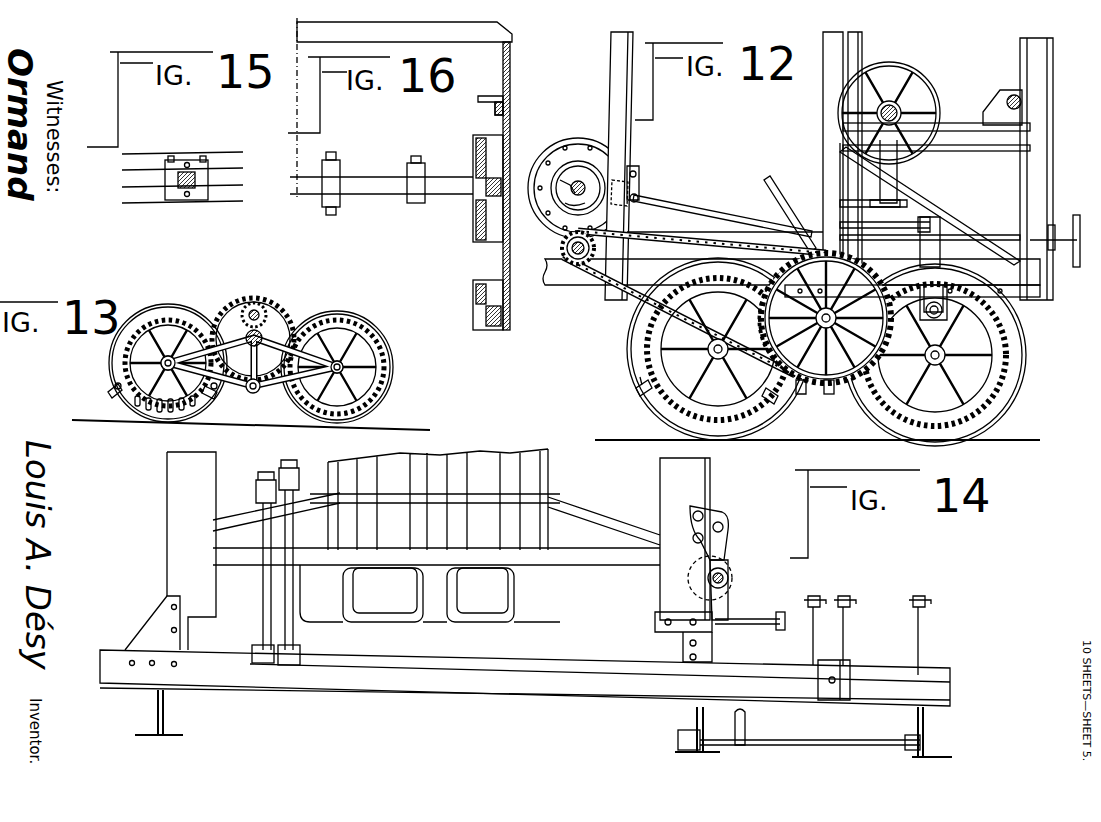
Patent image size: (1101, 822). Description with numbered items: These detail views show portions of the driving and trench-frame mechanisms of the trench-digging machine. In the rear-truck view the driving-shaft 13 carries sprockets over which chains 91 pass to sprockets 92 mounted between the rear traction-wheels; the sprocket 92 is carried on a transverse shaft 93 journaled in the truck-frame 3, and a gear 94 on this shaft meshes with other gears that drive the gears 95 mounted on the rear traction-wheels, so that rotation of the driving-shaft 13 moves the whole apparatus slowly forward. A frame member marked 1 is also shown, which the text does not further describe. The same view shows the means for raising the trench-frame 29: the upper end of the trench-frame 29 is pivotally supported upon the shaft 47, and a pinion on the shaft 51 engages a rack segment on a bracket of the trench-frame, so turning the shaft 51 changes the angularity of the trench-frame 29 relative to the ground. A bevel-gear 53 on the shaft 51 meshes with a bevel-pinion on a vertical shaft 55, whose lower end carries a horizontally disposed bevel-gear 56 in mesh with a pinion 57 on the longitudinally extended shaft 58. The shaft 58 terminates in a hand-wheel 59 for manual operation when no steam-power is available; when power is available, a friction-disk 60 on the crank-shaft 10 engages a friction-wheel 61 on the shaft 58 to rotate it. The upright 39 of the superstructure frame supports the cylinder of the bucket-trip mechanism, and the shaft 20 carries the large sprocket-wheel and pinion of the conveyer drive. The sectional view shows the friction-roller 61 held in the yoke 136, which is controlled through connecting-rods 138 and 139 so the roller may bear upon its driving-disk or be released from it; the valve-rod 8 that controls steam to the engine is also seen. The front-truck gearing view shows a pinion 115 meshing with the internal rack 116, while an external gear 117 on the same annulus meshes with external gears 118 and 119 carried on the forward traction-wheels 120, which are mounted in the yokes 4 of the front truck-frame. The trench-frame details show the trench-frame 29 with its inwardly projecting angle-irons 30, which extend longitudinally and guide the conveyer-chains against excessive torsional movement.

In FIG. 12, the frame beam 1 is at (556, 286).
In FIG. 14, the frame beam 1 is at (168, 718).
In FIG. 12, the truck-frame 3 is at (832, 394).
In FIG. 13, the yokes 4 is at (266, 392).
In FIG. 14, the valve-rod 8 is at (748, 722).
In FIG. 12, the crank-shaft 10 is at (552, 170).
In FIG. 12, the driving-shaft 13 is at (561, 250).
In FIG. 12, the shaft 20 is at (1025, 103).
In FIG. 16, the trench-frame 29 is at (498, 263).
In FIG. 16, the angle-irons 30 is at (505, 98).
In FIG. 12, the upright 39 is at (823, 108).
In FIG. 12, the shaft 47 is at (941, 320).
In FIG. 12, the shaft 51 is at (902, 112).
In FIG. 12, the bevel-gear 53 is at (905, 82).
In FIG. 12, the vertical shaft 55 is at (903, 190).
In FIG. 12, the bevel-gear 56 is at (932, 220).
In FIG. 12, the pinion 57 is at (922, 240).
In FIG. 12, the shaft 58 is at (704, 210).
In FIG. 14, the shaft 58 is at (730, 580).
In FIG. 12, the hand-wheel 59 is at (1076, 267).
In FIG. 12, the friction-disk 60 is at (568, 150).
In FIG. 12, the friction-wheel 61 is at (640, 196).
In FIG. 14, the friction-wheel 61 is at (730, 568).
In FIG. 12, the chains 91 is at (625, 290).
In FIG. 12, the sprockets 92 is at (766, 288).
In FIG. 12, the transverse shaft 93 is at (826, 318).
In FIG. 12, the gear 94 is at (802, 394).
In FIG. 12, the gears 95 is at (660, 348).
In FIG. 13, the pinion 115 is at (253, 302).
In FIG. 13, the internal rack 116 is at (288, 308).
In FIG. 13, the external gear 117 is at (238, 322).
In FIG. 13, the external gear 118 is at (117, 355).
In FIG. 13, the external gear 119 is at (388, 382).
In FIG. 13, the forward traction-wheels 120 is at (108, 376).
In FIG. 12, the yoke 136 is at (637, 172).
In FIG. 14, the yoke 136 is at (722, 530).
In FIG. 14, the connecting-rod 138 is at (786, 612).
In FIG. 14, the connecting-rod 139 is at (752, 626).